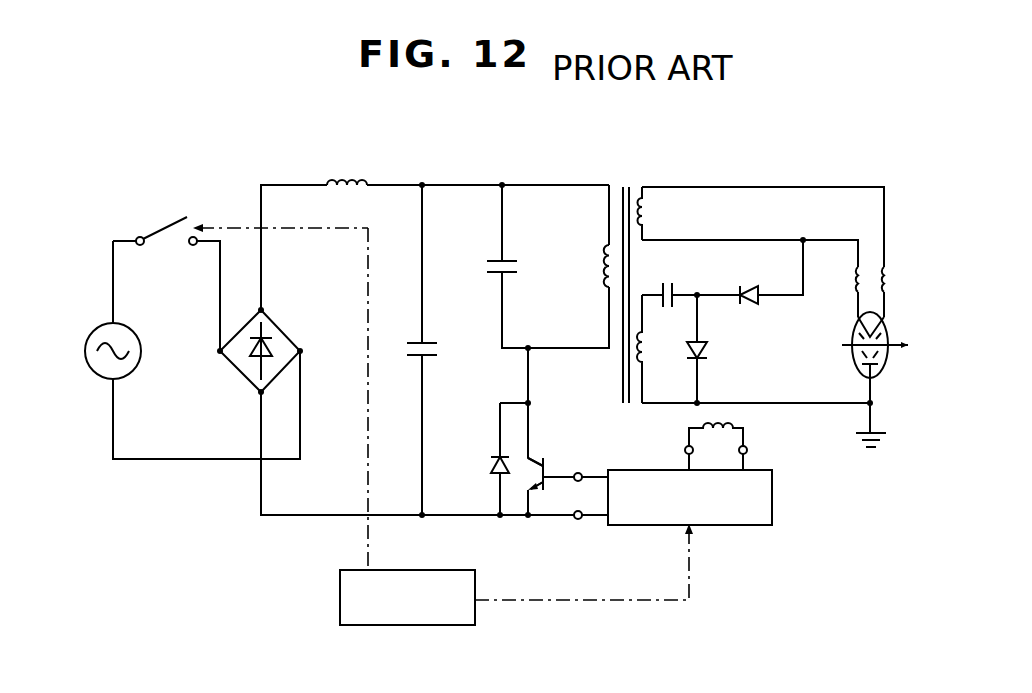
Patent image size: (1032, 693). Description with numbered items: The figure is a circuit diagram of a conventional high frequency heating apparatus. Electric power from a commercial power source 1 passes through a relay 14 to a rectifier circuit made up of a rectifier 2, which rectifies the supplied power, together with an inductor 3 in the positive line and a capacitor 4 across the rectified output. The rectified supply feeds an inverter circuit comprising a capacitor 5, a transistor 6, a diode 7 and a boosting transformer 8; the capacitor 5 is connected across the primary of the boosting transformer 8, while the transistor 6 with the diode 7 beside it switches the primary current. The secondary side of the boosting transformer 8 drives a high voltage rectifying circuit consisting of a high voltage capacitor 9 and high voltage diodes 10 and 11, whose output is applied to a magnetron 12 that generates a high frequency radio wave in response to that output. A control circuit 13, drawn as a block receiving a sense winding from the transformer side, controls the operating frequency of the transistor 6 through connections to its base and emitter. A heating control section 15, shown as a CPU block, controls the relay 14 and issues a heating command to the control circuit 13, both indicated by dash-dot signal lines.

The commercial power source 1 is at (141, 351).
The rectifier 2 is at (284, 321).
The inductor 3 is at (347, 180).
The capacitor 4 is at (437, 352).
The capacitor 5 is at (524, 268).
The transistor 6 is at (547, 450).
The diode 7 is at (490, 464).
The boosting transformer 8 is at (626, 182).
The high voltage capacitor 9 is at (668, 283).
The high voltage diode 10 is at (748, 306).
The high voltage diode 11 is at (708, 352).
The magnetron 12 is at (858, 372).
The control circuit 13 is at (772, 498).
The relay 14 is at (158, 218).
The heating control section 15 is at (340, 600).